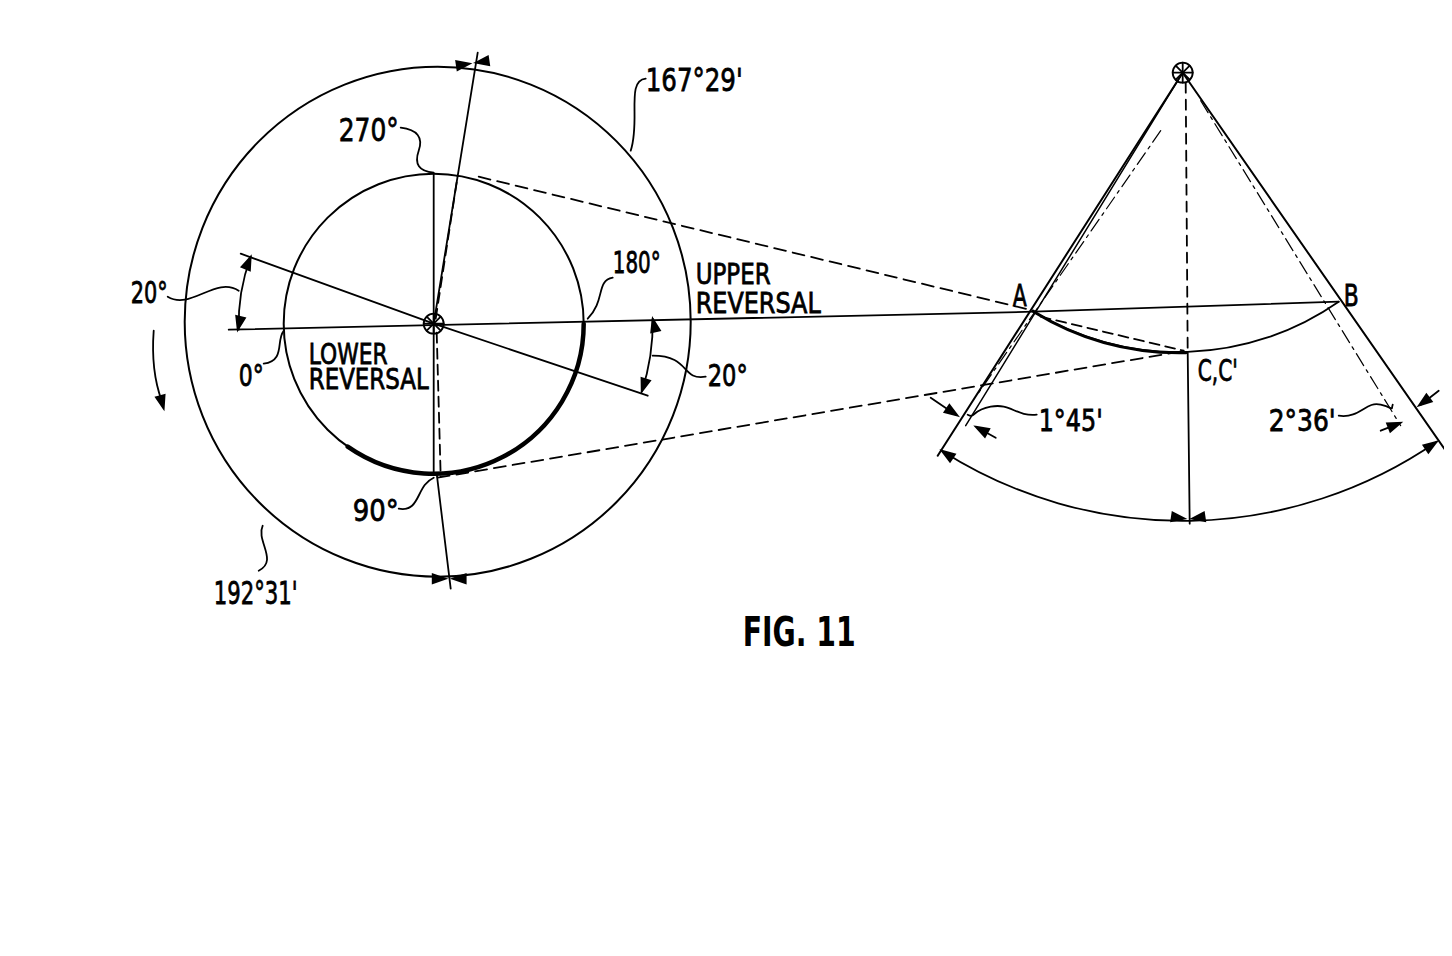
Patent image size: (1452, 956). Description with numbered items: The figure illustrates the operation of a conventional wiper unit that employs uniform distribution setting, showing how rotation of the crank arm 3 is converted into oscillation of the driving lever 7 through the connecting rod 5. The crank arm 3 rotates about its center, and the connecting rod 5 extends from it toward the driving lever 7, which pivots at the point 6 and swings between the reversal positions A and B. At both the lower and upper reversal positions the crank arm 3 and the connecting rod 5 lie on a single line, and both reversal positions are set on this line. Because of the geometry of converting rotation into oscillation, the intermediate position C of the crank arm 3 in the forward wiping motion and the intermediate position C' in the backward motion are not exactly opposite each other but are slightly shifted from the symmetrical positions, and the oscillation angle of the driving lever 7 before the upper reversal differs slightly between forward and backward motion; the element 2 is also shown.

The inner circular path (lower reversal arc) 2 is at (370, 420).
The crank arm 3 is at (517, 320).
The connecting rod 5 is at (815, 317).
The pivot point 6 is at (1186, 62).
The driving lever 7 is at (1288, 222).